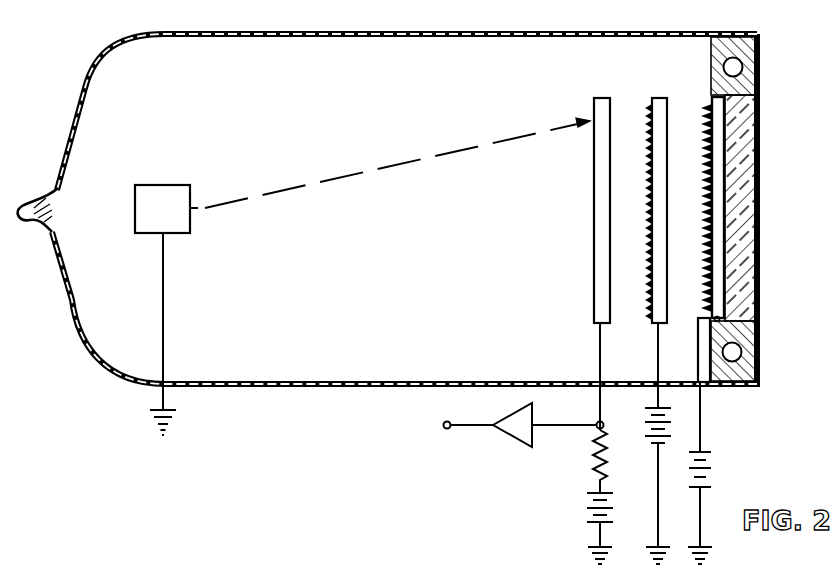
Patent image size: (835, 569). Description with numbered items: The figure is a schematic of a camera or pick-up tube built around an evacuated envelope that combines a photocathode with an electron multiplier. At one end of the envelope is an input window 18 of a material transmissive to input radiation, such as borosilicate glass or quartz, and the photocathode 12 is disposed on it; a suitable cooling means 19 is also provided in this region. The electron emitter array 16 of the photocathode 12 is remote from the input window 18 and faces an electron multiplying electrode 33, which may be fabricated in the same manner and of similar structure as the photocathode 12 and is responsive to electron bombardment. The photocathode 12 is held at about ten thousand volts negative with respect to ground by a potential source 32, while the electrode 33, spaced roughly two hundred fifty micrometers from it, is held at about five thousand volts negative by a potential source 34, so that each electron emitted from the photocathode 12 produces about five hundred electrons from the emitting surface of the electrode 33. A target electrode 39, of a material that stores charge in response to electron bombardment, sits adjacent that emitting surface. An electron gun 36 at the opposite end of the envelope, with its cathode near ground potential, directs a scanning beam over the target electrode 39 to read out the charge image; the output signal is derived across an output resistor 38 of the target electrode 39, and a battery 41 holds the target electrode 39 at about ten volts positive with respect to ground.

The photocathode 12 is at (717, 137).
The electron emitter array 16 is at (710, 110).
The input window 18 is at (748, 191).
The cooling means 19 is at (757, 80).
The potential source 32 is at (710, 460).
The electron multiplying electrode 33 is at (652, 103).
The potential source 34 is at (648, 430).
The electron gun 36 is at (149, 187).
The output resistor 38 is at (594, 444).
The target electrode 39 is at (594, 103).
The battery 41 is at (589, 508).